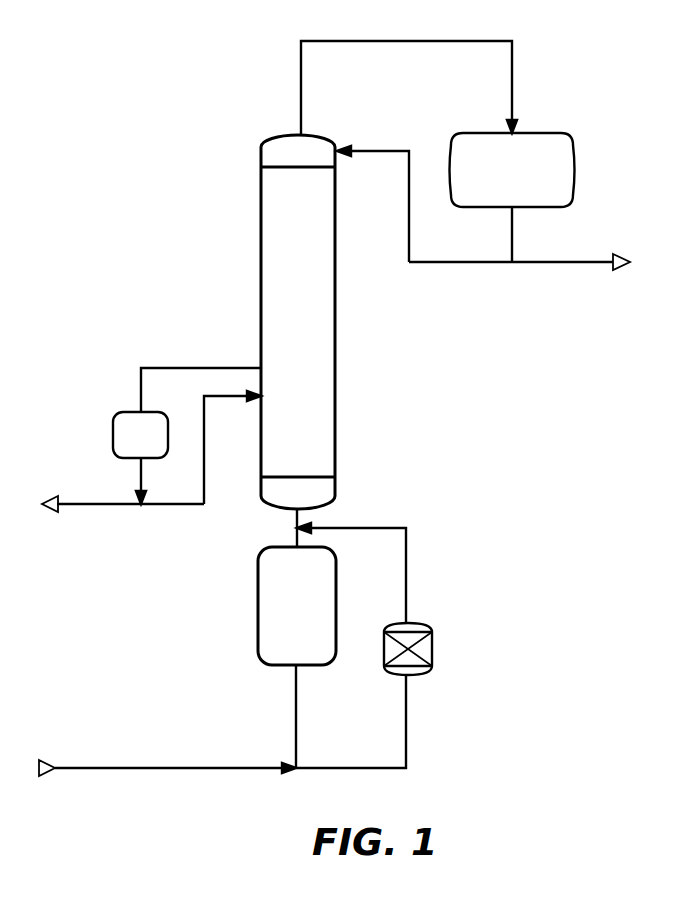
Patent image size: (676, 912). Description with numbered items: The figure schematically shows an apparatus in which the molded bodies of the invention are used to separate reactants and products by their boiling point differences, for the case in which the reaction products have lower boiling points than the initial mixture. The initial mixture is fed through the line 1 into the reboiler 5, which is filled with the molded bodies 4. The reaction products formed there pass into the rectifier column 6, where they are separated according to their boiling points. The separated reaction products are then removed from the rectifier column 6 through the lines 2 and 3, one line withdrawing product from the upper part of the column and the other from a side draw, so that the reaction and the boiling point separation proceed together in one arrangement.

The line 1 is at (148, 767).
The line 2 is at (86, 506).
The line 3 is at (570, 263).
The molded bodies 4 is at (432, 648).
The reboiler 5 is at (410, 676).
The rectifier column 6 is at (307, 266).